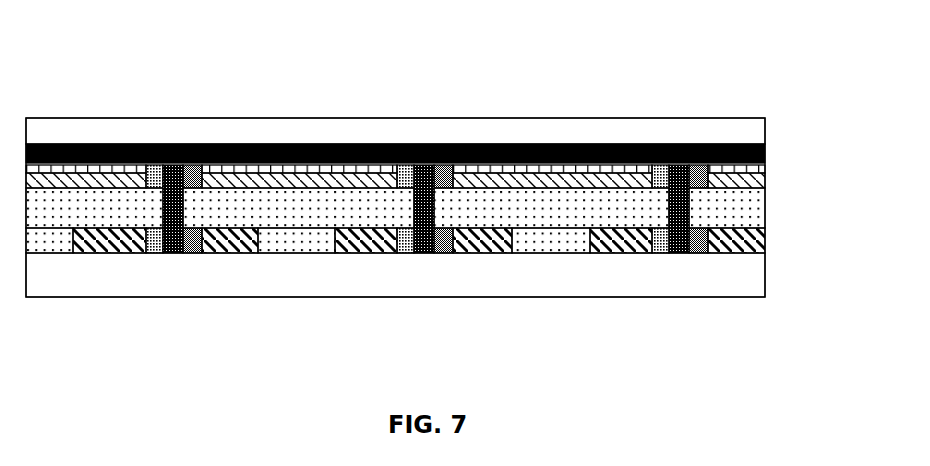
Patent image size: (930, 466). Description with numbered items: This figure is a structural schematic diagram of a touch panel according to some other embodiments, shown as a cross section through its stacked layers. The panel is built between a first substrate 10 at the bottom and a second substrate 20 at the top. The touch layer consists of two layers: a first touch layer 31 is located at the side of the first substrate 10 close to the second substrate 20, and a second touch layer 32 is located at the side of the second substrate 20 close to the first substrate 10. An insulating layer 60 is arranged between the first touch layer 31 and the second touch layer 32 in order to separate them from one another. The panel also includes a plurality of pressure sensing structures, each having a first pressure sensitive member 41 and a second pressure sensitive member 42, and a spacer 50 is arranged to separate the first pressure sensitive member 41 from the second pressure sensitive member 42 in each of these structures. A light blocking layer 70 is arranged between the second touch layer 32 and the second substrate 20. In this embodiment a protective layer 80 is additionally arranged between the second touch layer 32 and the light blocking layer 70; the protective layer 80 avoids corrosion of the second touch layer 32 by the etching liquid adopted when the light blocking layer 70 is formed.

The first substrate 10 is at (628, 285).
The second substrate 20 is at (613, 130).
The first touch layer 31 is at (372, 243).
The second touch layer 32 is at (242, 182).
The first pressure sensitive member 41 is at (192, 243).
The second pressure sensitive member 42 is at (152, 243).
The spacer 50 is at (425, 243).
The insulating layer 60 is at (753, 220).
The light blocking layer 70 is at (468, 145).
The protective layer 80 is at (755, 172).